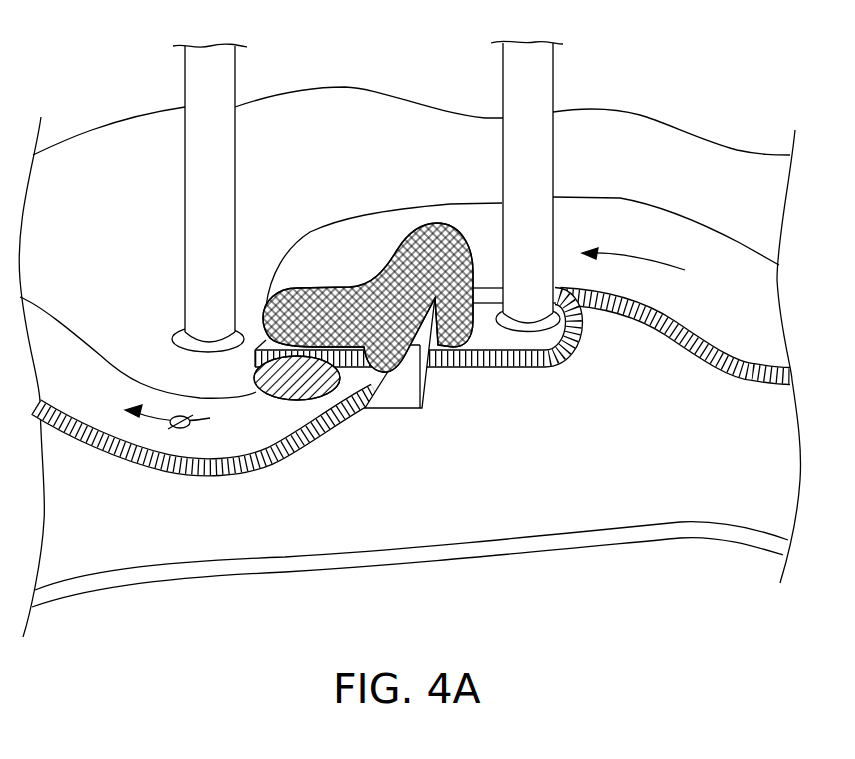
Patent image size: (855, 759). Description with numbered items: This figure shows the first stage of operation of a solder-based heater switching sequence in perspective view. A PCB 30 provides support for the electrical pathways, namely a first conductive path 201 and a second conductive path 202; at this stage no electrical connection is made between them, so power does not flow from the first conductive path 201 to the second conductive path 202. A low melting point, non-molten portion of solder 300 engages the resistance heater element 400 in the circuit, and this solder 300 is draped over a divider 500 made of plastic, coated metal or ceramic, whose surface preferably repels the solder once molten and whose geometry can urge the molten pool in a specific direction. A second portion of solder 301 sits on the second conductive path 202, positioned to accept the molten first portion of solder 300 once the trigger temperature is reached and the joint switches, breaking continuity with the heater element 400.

The PCB 30 is at (750, 495).
The first conductive path 201 is at (728, 253).
The second conductive path 202 is at (162, 397).
The non-molten solder 300 is at (403, 243).
The second portion of solder 301 is at (290, 400).
The resistance heater element 400 is at (218, 187).
The divider 500 is at (403, 400).